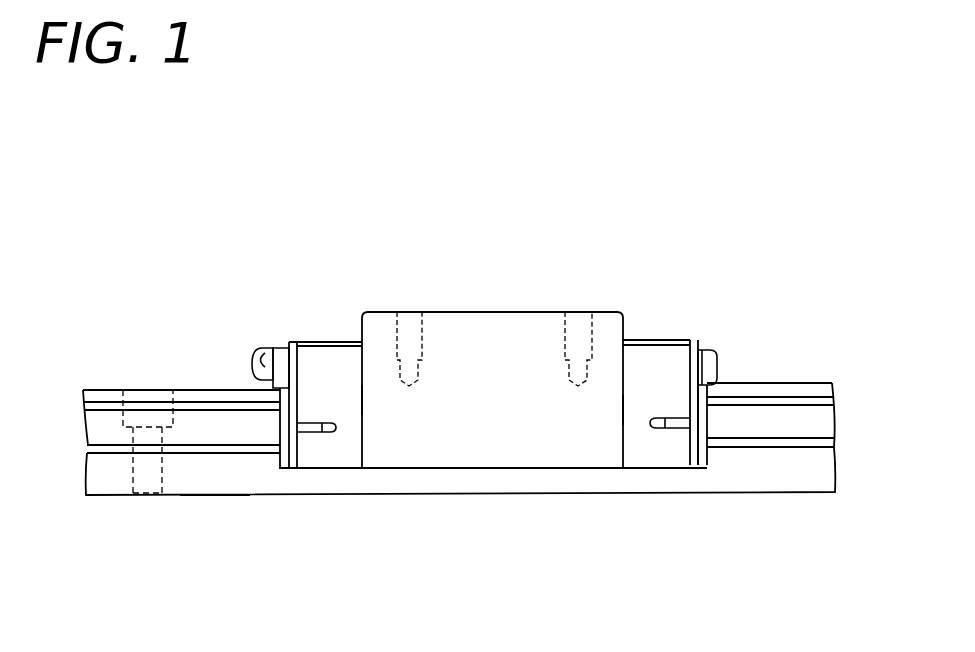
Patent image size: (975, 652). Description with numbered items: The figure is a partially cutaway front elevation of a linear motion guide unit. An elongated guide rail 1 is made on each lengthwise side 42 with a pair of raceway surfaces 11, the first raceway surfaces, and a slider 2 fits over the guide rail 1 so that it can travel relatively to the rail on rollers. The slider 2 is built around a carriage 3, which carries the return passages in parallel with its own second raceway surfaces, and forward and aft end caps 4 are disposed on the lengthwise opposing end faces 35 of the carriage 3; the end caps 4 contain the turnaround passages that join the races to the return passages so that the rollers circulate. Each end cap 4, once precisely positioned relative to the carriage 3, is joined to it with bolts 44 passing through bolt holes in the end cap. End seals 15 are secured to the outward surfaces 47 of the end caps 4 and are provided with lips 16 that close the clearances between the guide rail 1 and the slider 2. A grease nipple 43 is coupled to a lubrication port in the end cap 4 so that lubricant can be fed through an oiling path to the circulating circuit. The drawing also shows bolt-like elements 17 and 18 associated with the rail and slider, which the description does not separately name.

The guide rail 1 is at (790, 482).
The slider 2 is at (503, 404).
The carriage 3 is at (488, 345).
The end cap 4 is at (320, 345).
The raceway surfaces 11 is at (100, 452).
The end seal 15 is at (284, 470).
The lip 16 is at (287, 430).
The rail fixing bolt 17 is at (160, 470).
The slider mounting bolt 18 is at (399, 335).
The end faces 35 is at (362, 395).
The lengthwise side 42 is at (212, 477).
The grease nipple 43 is at (257, 356).
The bolts 44 is at (281, 345).
The outward surfaces 47 is at (708, 412).